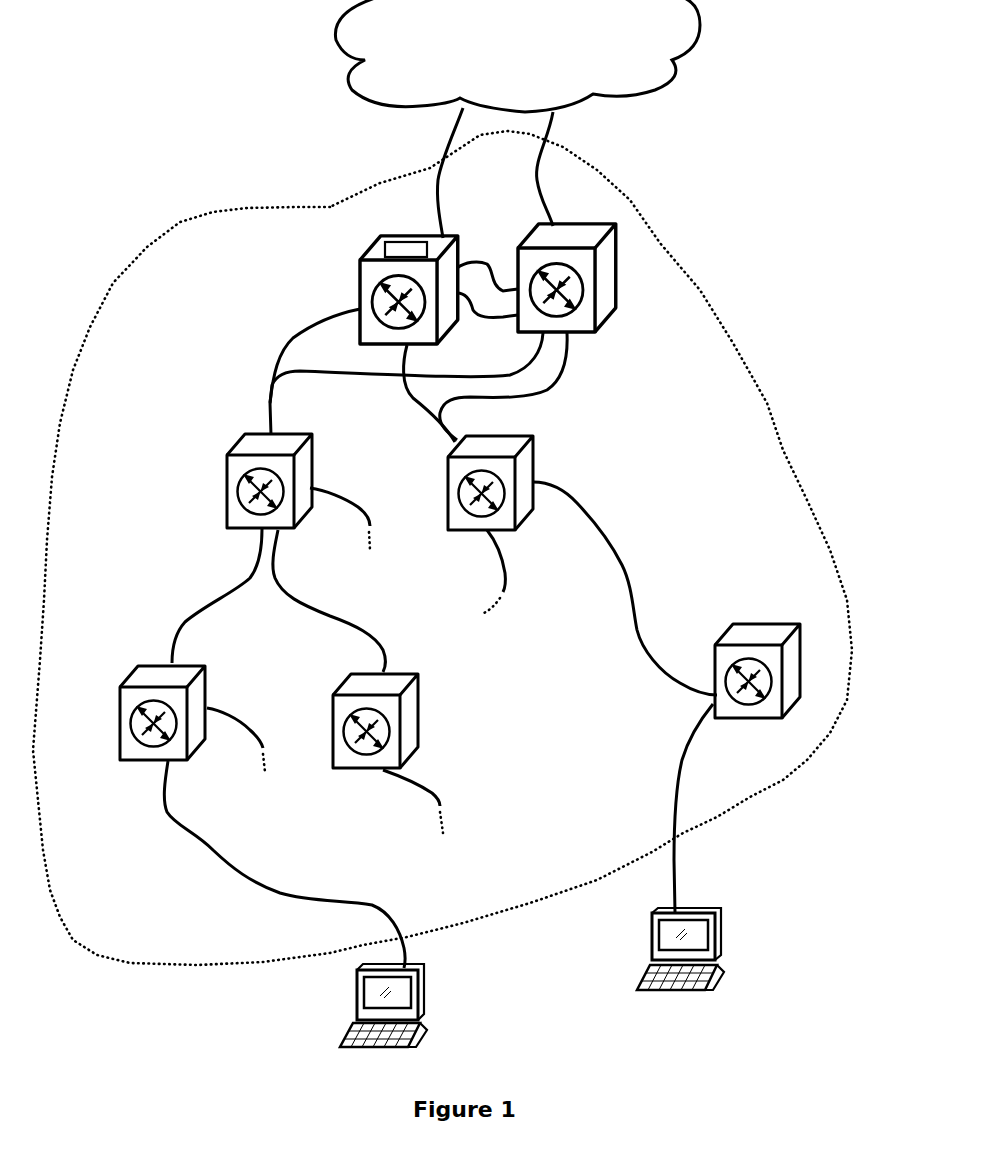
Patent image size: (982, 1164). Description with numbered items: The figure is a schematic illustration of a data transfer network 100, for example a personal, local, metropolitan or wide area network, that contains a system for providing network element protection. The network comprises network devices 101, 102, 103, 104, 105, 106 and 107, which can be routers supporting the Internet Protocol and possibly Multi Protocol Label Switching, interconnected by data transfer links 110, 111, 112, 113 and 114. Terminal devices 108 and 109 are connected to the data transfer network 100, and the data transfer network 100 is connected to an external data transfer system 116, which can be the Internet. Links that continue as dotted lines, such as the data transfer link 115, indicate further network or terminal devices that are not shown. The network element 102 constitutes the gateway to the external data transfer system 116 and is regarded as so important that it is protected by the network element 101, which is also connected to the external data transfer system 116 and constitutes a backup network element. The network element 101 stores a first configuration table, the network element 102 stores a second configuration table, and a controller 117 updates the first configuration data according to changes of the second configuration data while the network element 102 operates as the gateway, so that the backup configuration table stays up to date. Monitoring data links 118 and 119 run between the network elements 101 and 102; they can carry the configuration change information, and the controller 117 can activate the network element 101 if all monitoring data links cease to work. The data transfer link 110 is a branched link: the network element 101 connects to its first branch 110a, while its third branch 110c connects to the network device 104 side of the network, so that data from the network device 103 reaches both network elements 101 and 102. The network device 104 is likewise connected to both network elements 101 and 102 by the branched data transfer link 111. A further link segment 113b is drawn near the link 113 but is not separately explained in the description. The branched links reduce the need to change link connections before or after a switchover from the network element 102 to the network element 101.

The data transfer network 100 is at (657, 247).
The network element 101 is at (358, 268).
The network element 102 is at (605, 323).
The network device 103 is at (243, 529).
The network device 104 is at (460, 530).
The network device 105 is at (125, 760).
The network device 106 is at (348, 768).
The network device 107 is at (748, 624).
The terminal device 108 is at (425, 987).
The terminal device 109 is at (652, 942).
The branched data transfer link 110 is at (270, 373).
The first branch 110a is at (293, 343).
The third branch 110c is at (268, 410).
The branched data transfer link 111 is at (440, 433).
The data transfer link 112 is at (176, 635).
The data transfer link 113 is at (310, 606).
The link segment 113b is at (347, 375).
The data transfer link 114 is at (600, 528).
The data transfer link 115 is at (437, 794).
The external data transfer system 116 is at (527, 33).
The controller 117 is at (412, 238).
The monitoring data link 118 is at (490, 265).
The monitoring data link 119 is at (497, 320).